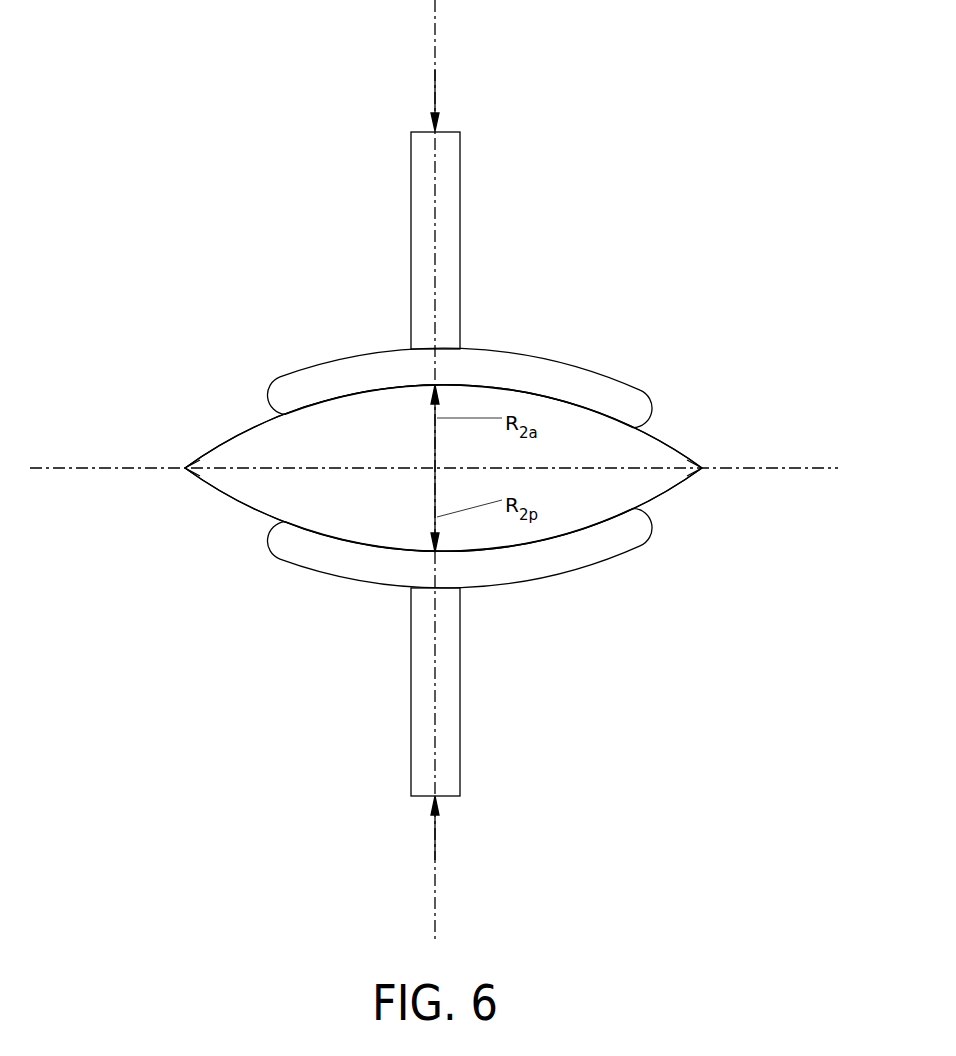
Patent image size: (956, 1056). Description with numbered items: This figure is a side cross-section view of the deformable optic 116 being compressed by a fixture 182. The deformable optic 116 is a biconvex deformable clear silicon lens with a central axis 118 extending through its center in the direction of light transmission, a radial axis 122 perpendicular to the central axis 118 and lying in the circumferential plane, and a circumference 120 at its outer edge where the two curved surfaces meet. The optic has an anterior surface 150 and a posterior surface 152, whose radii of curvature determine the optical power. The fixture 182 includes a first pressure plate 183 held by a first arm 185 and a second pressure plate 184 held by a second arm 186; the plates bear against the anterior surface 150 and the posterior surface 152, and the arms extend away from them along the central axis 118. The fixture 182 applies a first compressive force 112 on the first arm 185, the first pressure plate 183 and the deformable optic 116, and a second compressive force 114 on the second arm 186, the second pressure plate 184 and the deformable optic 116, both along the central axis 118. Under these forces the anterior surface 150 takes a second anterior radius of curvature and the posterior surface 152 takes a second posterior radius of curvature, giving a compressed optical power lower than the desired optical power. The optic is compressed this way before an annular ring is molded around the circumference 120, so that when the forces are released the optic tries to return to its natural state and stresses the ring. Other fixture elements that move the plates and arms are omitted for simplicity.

The first compressive force 112 is at (438, 84).
The second compressive force 114 is at (438, 843).
The deformable optic 116 is at (593, 437).
The central axis 118 is at (438, 18).
The circumference 120 is at (185, 465).
The radial axis 122 is at (110, 470).
The anterior surface 150 is at (340, 398).
The posterior surface 152 is at (605, 527).
The fixture 182 is at (455, 464).
The first pressure plate 183 is at (499, 361).
The second pressure plate 184 is at (330, 578).
The first arm 185 is at (460, 201).
The second arm 186 is at (410, 711).